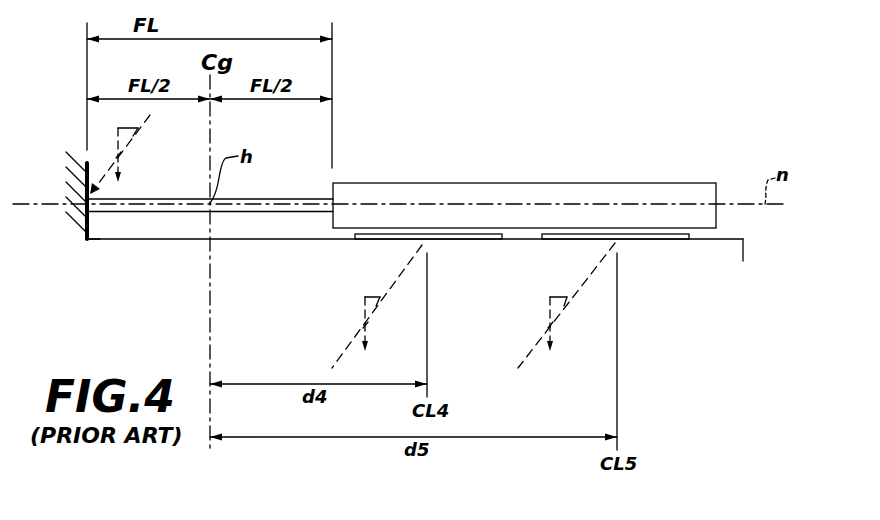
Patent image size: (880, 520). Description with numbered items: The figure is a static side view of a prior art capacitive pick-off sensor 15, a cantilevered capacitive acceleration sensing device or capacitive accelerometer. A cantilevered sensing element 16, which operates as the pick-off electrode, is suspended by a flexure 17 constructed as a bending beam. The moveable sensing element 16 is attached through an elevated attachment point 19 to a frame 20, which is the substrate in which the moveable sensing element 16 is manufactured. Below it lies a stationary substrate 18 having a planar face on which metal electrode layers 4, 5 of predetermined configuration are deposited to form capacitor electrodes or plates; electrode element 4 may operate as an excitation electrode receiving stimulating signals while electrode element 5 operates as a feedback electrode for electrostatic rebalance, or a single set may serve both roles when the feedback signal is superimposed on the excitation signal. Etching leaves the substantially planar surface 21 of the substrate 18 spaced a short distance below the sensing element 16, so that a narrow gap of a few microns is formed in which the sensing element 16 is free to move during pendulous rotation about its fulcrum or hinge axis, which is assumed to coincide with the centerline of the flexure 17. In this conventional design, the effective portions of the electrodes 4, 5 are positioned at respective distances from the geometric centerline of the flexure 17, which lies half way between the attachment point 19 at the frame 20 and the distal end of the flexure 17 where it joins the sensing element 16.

The electrode element 4 is at (452, 239).
The electrode element 5 is at (658, 235).
The capacitive pick-off sensor 15 is at (544, 147).
The cantilevered sensing element 16 is at (677, 183).
The flexure 17 is at (260, 199).
The stationary substrate 18 is at (744, 250).
The attachment point 19 is at (97, 221).
The frame 20 is at (57, 190).
The substantially planar surface 21 is at (729, 239).